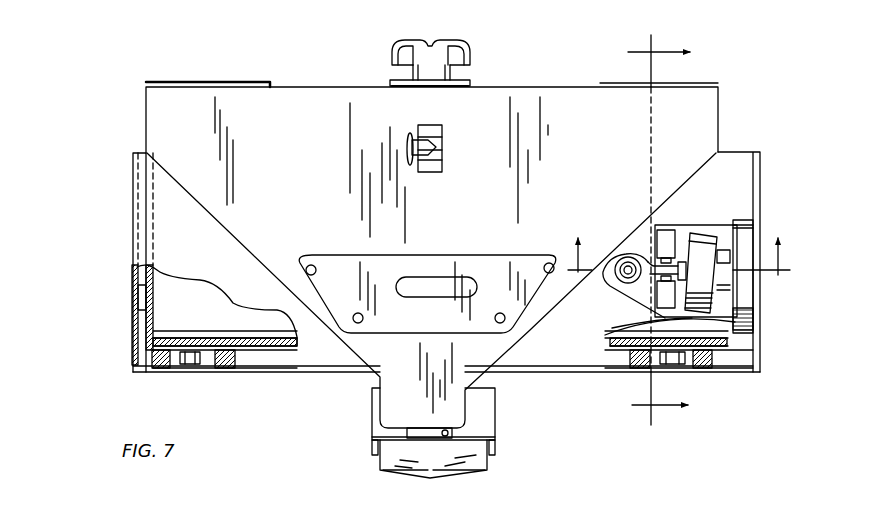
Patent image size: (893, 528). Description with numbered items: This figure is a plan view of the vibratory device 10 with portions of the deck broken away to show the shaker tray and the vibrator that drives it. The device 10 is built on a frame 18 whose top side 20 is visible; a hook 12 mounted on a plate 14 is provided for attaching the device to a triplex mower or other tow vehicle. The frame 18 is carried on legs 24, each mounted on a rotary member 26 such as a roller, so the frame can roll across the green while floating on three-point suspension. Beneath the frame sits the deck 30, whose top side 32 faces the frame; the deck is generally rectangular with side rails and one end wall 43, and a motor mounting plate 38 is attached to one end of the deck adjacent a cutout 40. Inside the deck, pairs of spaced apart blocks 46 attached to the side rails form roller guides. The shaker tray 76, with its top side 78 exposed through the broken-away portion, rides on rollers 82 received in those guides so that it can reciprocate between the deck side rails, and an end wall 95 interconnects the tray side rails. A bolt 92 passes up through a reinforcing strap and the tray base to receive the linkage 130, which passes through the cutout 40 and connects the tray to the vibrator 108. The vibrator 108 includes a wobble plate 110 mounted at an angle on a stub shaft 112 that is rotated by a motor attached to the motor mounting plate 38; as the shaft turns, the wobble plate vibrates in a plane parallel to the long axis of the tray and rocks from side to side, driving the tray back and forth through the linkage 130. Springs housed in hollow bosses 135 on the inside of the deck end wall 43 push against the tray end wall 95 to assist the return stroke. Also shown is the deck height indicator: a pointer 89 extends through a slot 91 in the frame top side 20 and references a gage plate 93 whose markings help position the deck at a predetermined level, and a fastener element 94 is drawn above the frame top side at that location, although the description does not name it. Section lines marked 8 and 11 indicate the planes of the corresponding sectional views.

The vibratory device 10 is at (731, 73).
The hook 12 is at (462, 278).
The plate 14 is at (125, 268).
The frame 18 is at (575, 83).
The top side 20 is at (275, 97).
The legs 24 is at (362, 430).
The rotary member 26 is at (477, 468).
The deck 30 is at (130, 172).
The top side 32 is at (183, 212).
The motor mounting plate 38 is at (765, 183).
The cutout 40 is at (703, 232).
The end wall 43 is at (140, 356).
The blocks 46 is at (172, 372).
The shaker tray 76 is at (143, 240).
The top side 78 is at (133, 365).
The rollers 82 is at (166, 366).
The pointer 89 is at (412, 147).
The slot 91 is at (412, 137).
The bolt 92 is at (616, 282).
The gage plate 93 is at (442, 127).
The wing nut 94 is at (440, 38).
The end wall 95 is at (150, 340).
The vibrator 108 is at (764, 230).
The wobble plate 110 is at (728, 222).
The shaft 112 is at (745, 318).
The linkage 130 is at (660, 300).
The hollow boss 135 is at (135, 195).
The section line 8- 8 is at (658, 231).
The section line 11- 11 is at (682, 267).